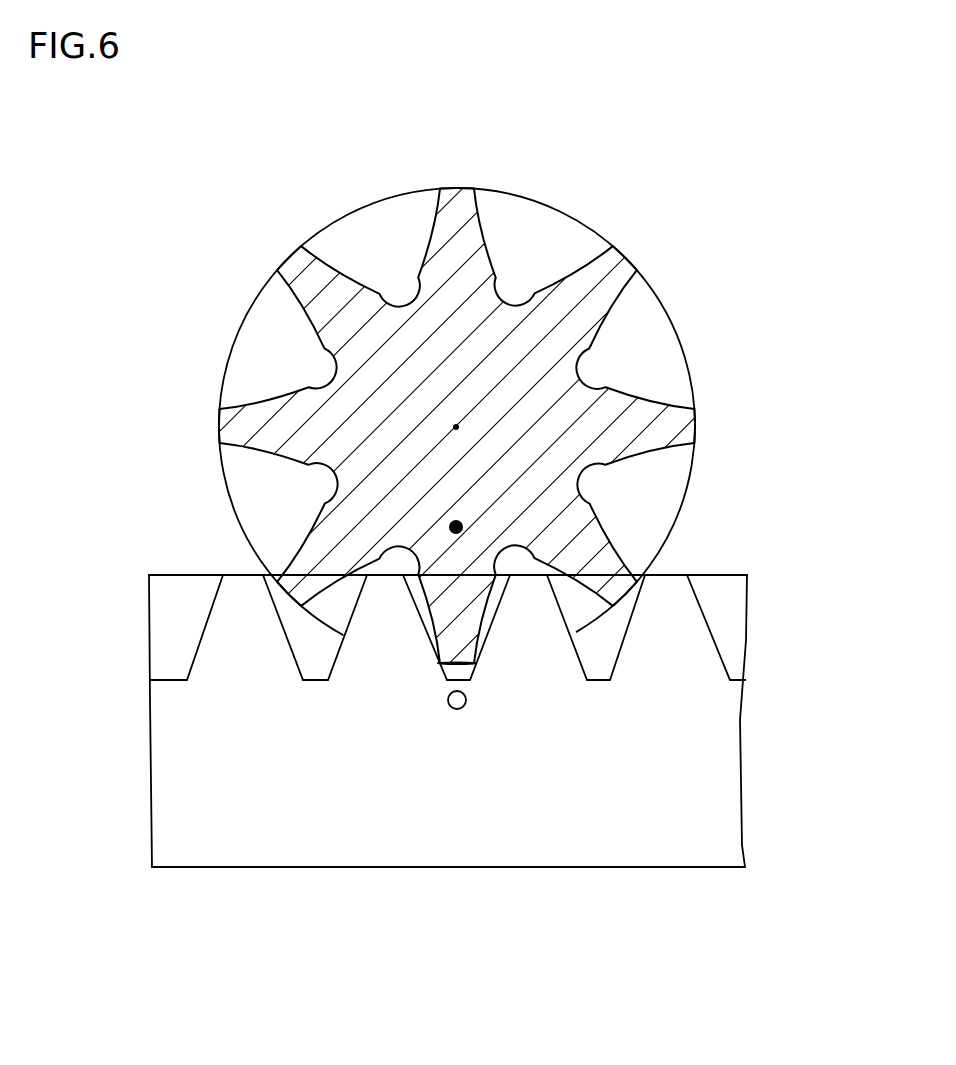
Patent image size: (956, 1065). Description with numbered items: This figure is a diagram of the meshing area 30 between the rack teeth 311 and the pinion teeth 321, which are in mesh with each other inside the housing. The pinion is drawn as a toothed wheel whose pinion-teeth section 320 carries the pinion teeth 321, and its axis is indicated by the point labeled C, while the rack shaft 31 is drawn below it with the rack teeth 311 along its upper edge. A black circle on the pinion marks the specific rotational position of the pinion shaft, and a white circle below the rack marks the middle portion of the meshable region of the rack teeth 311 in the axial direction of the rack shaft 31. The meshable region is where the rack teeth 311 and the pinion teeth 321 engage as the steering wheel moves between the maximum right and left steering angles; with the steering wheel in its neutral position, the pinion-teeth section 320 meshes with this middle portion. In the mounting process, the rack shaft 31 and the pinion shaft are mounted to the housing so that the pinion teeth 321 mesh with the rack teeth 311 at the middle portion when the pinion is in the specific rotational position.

The meshing area 30 is at (702, 518).
The pinion-teeth section 320 is at (287, 213).
The pinion teeth 321 is at (647, 415).
The rack shaft 31 is at (660, 868).
The rack teeth 311 is at (388, 603).
The center of gear C is at (455, 426).